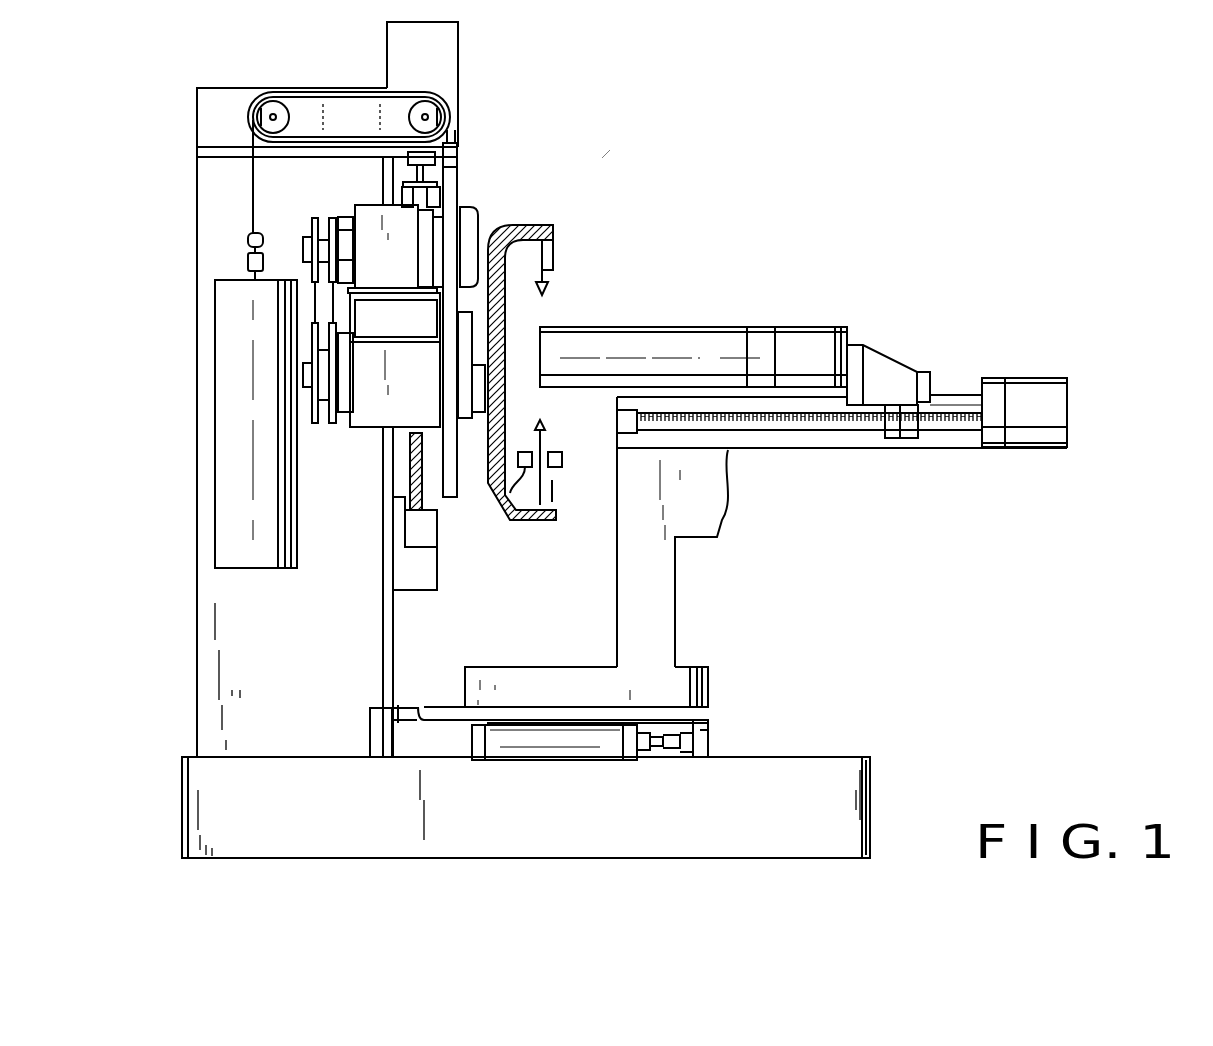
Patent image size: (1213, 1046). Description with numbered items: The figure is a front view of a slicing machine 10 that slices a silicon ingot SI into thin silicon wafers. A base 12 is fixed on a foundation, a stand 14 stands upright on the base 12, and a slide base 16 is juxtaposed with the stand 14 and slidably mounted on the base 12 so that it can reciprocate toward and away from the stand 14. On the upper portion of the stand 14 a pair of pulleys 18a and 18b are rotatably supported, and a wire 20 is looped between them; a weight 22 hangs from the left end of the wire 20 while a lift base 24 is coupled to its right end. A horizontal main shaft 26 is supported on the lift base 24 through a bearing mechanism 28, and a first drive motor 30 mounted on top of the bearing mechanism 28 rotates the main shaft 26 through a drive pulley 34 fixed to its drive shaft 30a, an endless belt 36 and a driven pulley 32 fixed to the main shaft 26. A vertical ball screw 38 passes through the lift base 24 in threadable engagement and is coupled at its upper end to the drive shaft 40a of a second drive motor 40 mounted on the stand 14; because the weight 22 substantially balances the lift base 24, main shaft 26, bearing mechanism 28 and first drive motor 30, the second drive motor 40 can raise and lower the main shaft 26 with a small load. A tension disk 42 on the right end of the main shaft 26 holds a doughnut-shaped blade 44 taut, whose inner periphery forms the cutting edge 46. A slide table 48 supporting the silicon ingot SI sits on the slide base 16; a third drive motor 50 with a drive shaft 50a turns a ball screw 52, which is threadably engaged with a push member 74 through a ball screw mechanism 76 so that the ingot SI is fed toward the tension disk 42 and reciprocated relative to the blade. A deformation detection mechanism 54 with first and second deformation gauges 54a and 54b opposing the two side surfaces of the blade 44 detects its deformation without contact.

The slicing machine 10 is at (598, 162).
The base 12 is at (862, 778).
The stand 14 is at (200, 588).
The slide base 16 is at (672, 630).
The pulley 18a is at (268, 102).
The pulley 18b is at (440, 104).
The wire 20 is at (330, 92).
The weight 22 is at (233, 418).
The lift base 24 is at (449, 497).
The main shaft 26 is at (480, 333).
The bearing mechanism 28 is at (365, 420).
The first drive motor 30 is at (372, 216).
The drive shaft 30a is at (305, 248).
The driven pulley 32 is at (314, 420).
The drive pulley 34 is at (334, 216).
The endless belt 36 is at (313, 310).
The ball screw 38 is at (410, 478).
The second drive motor 40 is at (452, 43).
The drive shaft 40a is at (427, 173).
The tension disk 42 is at (533, 228).
The blade 44 is at (553, 258).
The cutting edge 46 is at (549, 292).
The slide table 48 is at (790, 450).
The third drive motor 50 is at (1033, 387).
The drive shaft 50a is at (977, 410).
The ball screw 52 is at (838, 434).
The deformation detection mechanism 54 is at (564, 476).
The first deformation gauge 54a is at (554, 452).
The second deformation gauge 54b is at (500, 508).
The push member 74 is at (884, 356).
The ball screw mechanism 76 is at (905, 440).
The silicon ingot SI is at (718, 336).